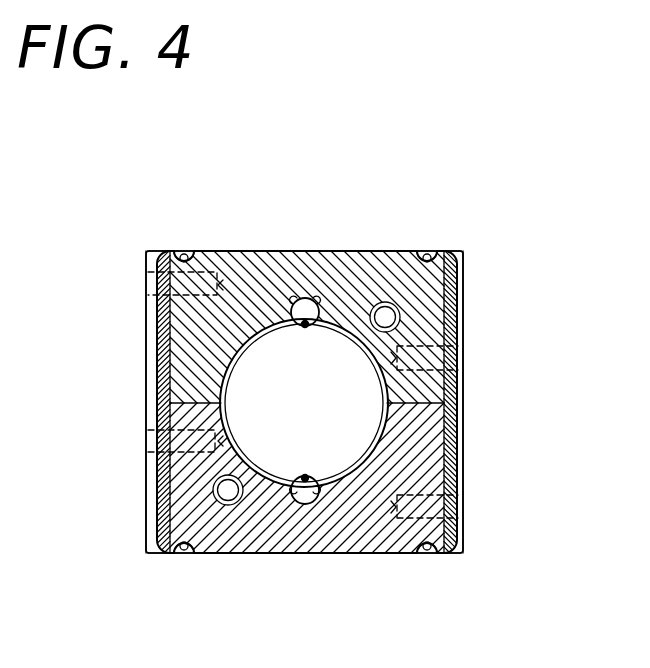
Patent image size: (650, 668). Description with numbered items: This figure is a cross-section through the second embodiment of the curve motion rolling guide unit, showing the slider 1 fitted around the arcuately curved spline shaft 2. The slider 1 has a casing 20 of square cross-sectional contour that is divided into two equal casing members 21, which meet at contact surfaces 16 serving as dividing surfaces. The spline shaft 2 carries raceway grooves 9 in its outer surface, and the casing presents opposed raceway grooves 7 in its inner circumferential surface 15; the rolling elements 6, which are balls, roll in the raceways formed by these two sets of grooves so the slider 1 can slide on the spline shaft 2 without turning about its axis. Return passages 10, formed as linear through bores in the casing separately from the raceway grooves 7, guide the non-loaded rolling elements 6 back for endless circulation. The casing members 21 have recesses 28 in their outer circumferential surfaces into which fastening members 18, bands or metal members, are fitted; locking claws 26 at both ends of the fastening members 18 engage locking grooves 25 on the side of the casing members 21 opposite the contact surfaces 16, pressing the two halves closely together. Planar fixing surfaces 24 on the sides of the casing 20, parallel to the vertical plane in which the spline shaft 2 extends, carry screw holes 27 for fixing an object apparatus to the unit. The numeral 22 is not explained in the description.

The slider 1 is at (403, 189).
The spline shaft 2 is at (292, 414).
The rolling elements 6 is at (312, 300).
The raceway grooves 7 is at (297, 300).
The raceway grooves 9 is at (305, 328).
The return passages 10 is at (385, 317).
The inner circumferential surface 15 is at (221, 382).
The contact surfaces 16 is at (447, 411).
The fastening members 18 is at (157, 468).
The casing 20 is at (352, 251).
The casing members 21 is at (305, 298).
The side wall 22 is at (157, 318).
The fixing surfaces 24 is at (157, 341).
The locking grooves 25 is at (193, 258).
The locking claws 26 is at (184, 254).
The screw holes 27 is at (155, 283).
The recesses 28 is at (157, 410).